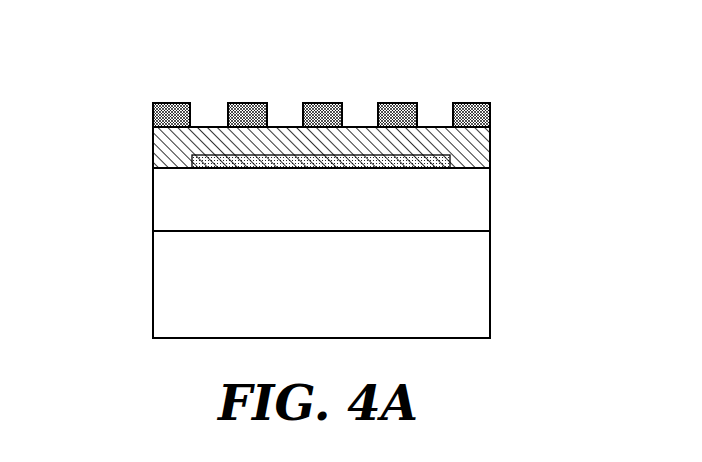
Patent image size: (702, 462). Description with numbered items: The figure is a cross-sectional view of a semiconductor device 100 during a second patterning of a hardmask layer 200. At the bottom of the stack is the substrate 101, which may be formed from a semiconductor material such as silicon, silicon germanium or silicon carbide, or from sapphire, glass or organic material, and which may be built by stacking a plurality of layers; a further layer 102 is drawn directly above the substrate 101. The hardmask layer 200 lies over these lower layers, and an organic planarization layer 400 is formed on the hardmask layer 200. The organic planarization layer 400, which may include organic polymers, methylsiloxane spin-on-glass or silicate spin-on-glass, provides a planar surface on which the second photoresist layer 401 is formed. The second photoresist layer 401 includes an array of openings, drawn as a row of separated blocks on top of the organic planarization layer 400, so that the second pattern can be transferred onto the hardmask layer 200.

The semiconductor device 100 is at (370, 253).
The substrate 101 is at (347, 306).
The second substrate layer 102 is at (347, 213).
The hardmask layer 200 is at (460, 161).
The organic planarization layer 400 is at (180, 147).
The second photoresist layer 401 is at (168, 92).